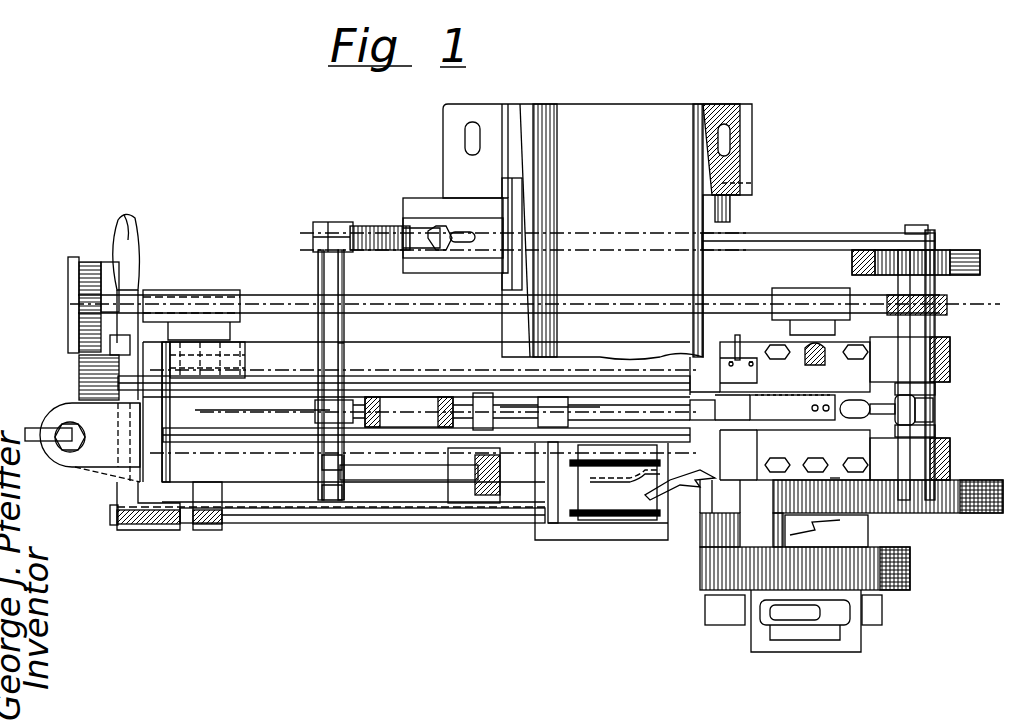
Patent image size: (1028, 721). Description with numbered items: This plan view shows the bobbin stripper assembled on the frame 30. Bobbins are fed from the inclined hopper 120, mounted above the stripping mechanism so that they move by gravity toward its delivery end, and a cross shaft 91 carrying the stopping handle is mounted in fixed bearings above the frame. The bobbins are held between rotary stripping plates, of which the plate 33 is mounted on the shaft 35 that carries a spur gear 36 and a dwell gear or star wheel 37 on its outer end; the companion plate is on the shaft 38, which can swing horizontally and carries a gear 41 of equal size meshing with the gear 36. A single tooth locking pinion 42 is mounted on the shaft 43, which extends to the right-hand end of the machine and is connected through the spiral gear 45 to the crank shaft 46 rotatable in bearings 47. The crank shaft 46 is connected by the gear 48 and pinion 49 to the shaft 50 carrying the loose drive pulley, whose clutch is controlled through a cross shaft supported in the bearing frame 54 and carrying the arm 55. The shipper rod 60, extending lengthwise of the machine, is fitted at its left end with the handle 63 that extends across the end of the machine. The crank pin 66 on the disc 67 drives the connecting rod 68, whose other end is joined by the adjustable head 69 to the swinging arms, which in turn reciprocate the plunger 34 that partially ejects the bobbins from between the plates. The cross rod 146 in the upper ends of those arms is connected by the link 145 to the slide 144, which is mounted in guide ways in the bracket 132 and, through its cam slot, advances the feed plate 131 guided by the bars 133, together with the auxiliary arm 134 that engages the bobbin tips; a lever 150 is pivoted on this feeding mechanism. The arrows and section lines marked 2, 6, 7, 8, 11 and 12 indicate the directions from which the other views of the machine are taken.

The inclined table or hopper 120 is at (597, 232).
The cross shaft 91 is at (732, 205).
The section arrow 12 is at (850, 181).
The adjustable head 69 is at (345, 225).
The connecting rod 68 is at (803, 233).
The crank pin 66 is at (916, 225).
The disc 67 is at (960, 250).
The shaft 43 is at (262, 295).
The spiral gear 45 is at (948, 303).
The single tooth locking pinion 42 is at (78, 257).
The dwell gear or star wheel 37 is at (80, 380).
The section arrow 8 is at (68, 295).
The handle 63 is at (116, 225).
The spur gear 36 is at (112, 345).
The frame 30 is at (248, 350).
The shaft 35 is at (280, 375).
The cross rod 146 is at (345, 350).
The plunger 34 is at (420, 397).
The section line 7 is at (391, 406).
The shaft 38 is at (258, 420).
The gear 41 is at (100, 460).
The shipper rod 60 is at (360, 535).
The slide 144 is at (506, 498).
The link 145 is at (384, 503).
The auxiliary arm 134 is at (535, 530).
The feed plate 131 is at (612, 530).
The bracket or casting 132 is at (490, 505).
The bars 133 is at (640, 520).
The lever 150 is at (660, 505).
The section arrow 2 is at (552, 555).
The section arrow 11 is at (432, 555).
The rotary stripping plate 33 is at (712, 355).
The crank shaft 46 is at (935, 385).
The section arrow 6 is at (948, 410).
The bearings 47 is at (945, 350).
The shaft 50 is at (808, 465).
The pinion 49 is at (828, 478).
The gear 48 is at (950, 515).
The arm 55 is at (715, 527).
The bearing frame 54 is at (858, 652).